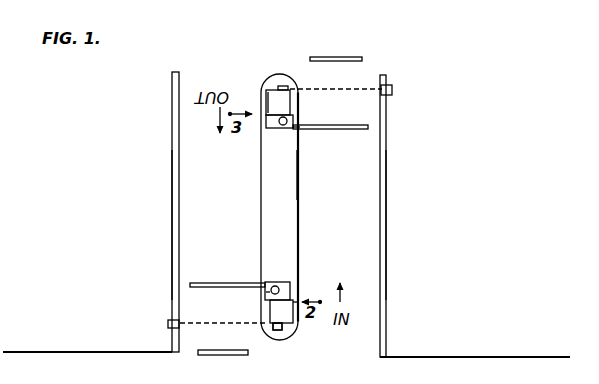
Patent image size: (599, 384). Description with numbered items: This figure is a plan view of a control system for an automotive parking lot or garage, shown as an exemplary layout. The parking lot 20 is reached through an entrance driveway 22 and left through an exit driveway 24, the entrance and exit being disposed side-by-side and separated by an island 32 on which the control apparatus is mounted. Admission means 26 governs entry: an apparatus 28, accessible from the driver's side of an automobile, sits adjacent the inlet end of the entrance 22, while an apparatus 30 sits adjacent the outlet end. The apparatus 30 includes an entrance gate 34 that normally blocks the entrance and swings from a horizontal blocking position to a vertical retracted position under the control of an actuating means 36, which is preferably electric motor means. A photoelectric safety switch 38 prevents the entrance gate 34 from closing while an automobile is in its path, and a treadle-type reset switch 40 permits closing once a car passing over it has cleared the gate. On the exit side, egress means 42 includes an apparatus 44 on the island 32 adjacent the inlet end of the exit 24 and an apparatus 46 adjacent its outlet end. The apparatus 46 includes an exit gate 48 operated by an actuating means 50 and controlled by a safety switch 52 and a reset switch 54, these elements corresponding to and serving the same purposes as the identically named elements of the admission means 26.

The parking lot 20 is at (477, 106).
The entrance driveway 22 is at (352, 205).
The exit driveway 24 is at (229, 233).
The admission means 26 is at (335, 131).
The apparatus 28 is at (284, 324).
The apparatus 30 is at (271, 135).
The island 32 is at (299, 172).
The entrance gate 34 is at (348, 125).
The actuating means 36 is at (294, 116).
The safety switch 38 is at (344, 89).
The reset switch 40 is at (357, 57).
The egress means 42 is at (269, 92).
The apparatus 44 is at (273, 100).
The apparatus 46 is at (265, 293).
The exit gate 48 is at (208, 283).
The actuating means 50 is at (284, 292).
The safety switch 52 is at (180, 325).
The reset switch 54 is at (220, 355).